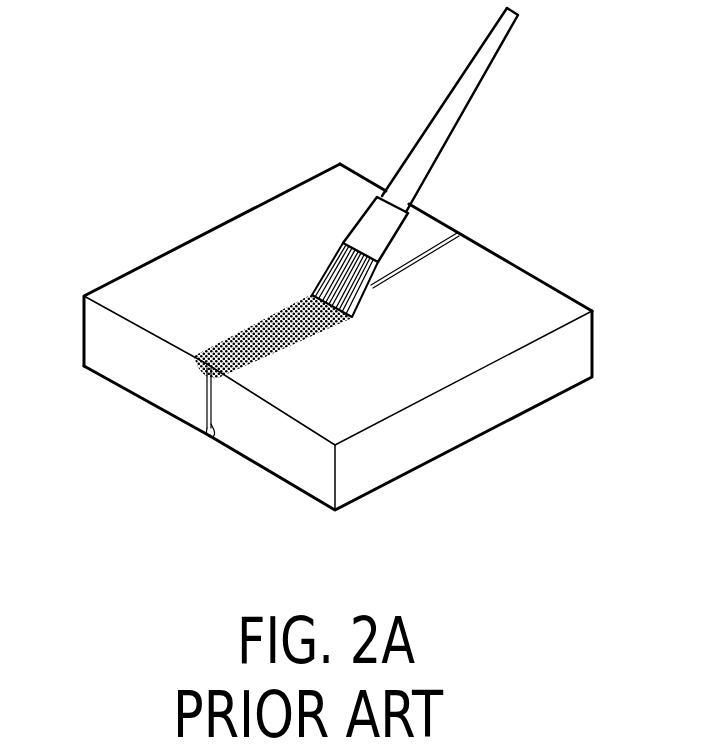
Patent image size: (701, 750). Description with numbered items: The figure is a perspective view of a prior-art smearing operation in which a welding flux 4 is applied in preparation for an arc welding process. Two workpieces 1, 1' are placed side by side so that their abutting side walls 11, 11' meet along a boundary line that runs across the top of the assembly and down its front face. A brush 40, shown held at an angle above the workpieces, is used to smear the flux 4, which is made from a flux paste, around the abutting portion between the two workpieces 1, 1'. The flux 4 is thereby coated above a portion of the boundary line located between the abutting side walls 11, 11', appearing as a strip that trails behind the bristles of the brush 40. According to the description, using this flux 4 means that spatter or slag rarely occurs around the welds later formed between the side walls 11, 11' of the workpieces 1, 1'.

The workpiece 1 is at (399, 346).
The workpiece 1' is at (185, 300).
The abutting side wall 11 is at (278, 375).
The abutting side wall 11' is at (154, 418).
The welding flux 4 is at (270, 322).
The brush 40 is at (445, 118).